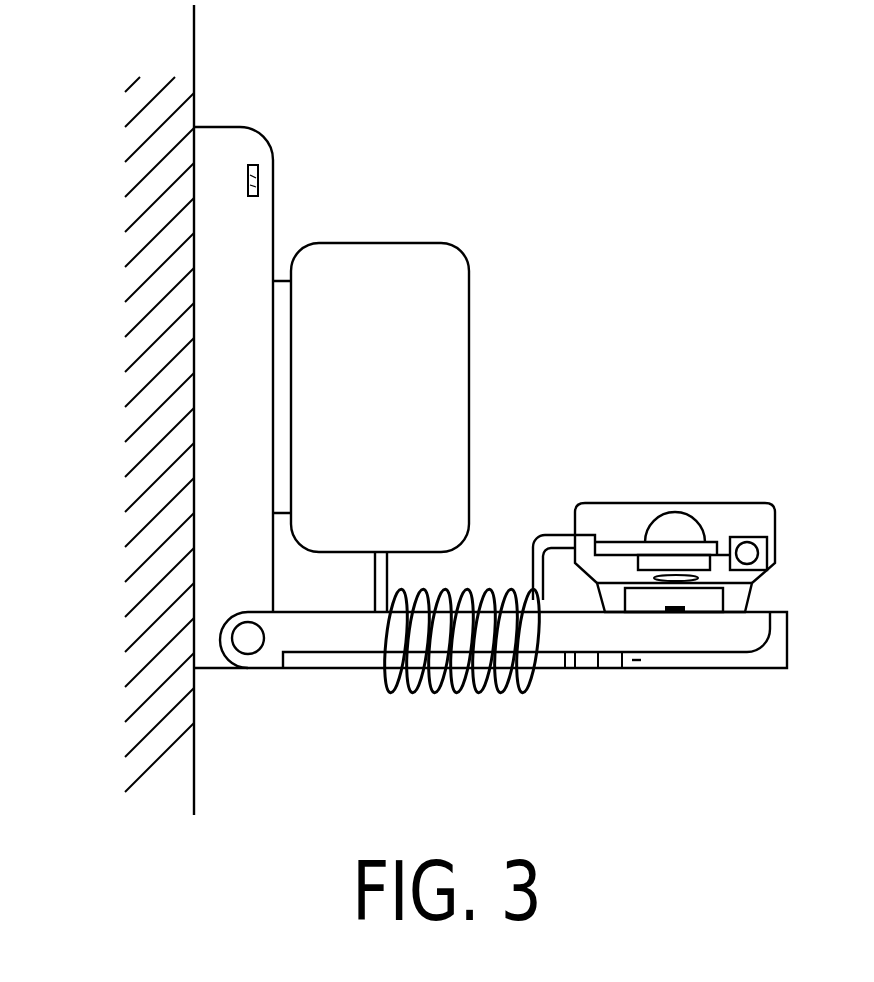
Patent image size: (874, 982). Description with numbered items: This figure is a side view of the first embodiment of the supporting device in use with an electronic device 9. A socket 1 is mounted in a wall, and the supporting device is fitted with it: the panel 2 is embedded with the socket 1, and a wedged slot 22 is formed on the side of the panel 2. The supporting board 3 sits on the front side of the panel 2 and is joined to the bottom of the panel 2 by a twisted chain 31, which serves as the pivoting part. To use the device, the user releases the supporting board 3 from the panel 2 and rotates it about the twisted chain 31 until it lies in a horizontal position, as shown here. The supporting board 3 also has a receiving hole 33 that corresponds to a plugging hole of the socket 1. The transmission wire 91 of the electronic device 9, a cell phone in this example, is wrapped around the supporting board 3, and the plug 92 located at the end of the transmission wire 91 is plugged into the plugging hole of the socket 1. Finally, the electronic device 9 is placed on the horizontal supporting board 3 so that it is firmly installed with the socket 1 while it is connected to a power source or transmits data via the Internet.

The socket 1 is at (268, 377).
The panel 2 is at (253, 257).
The wedged slot 22 is at (273, 160).
The supporting board 3 is at (712, 661).
The twisted chain 31 is at (252, 645).
The receiving hole 33 is at (660, 670).
The electronic device 9 is at (766, 521).
The transmission wire 91 is at (512, 688).
The plug 92 is at (440, 327).